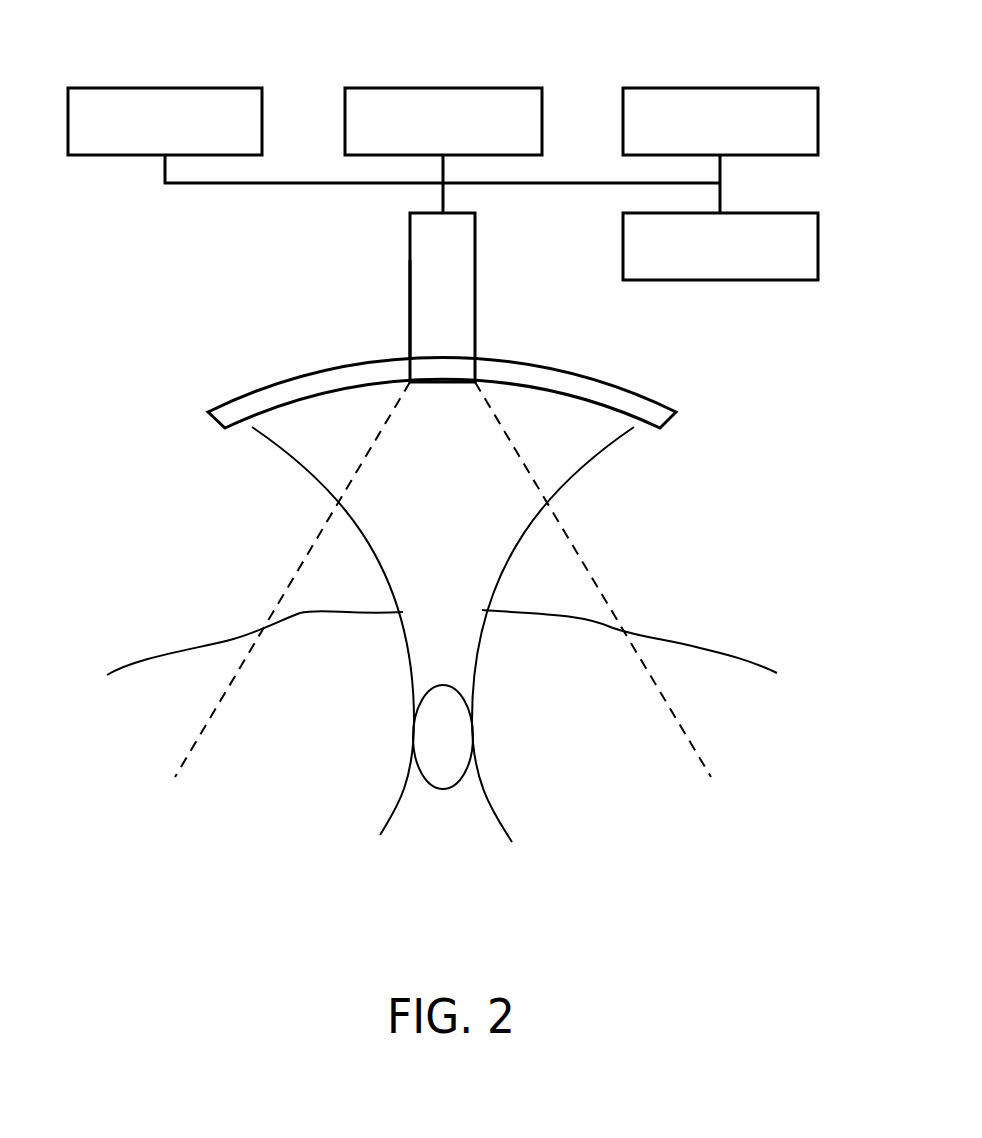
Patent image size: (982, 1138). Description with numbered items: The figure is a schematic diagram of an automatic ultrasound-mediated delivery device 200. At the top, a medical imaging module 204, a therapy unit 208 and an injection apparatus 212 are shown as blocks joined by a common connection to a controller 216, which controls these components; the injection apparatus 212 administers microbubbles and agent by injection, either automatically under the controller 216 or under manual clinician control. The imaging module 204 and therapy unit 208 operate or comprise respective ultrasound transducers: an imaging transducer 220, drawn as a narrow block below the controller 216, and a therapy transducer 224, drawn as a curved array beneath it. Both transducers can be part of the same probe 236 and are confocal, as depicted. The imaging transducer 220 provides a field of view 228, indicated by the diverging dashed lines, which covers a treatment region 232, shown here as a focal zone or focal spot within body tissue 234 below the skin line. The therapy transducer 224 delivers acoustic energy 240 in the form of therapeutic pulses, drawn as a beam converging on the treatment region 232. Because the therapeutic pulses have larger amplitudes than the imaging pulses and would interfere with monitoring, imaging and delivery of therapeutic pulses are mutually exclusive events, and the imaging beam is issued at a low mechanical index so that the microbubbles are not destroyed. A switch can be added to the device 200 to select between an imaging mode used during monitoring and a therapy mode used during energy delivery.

The device 200 is at (760, 428).
The medical imaging module 204 is at (230, 88).
The controller 216 is at (502, 88).
The therapy unit 208 is at (773, 88).
The injection apparatus 212 is at (772, 282).
The imaging transducer 220 is at (476, 252).
The probe 236 is at (405, 312).
The therapy transducer 224 is at (225, 404).
The field of view 228 is at (565, 532).
The acoustic energy 240 is at (475, 655).
The treatment region 232 is at (455, 730).
The body tissue 234 is at (697, 663).